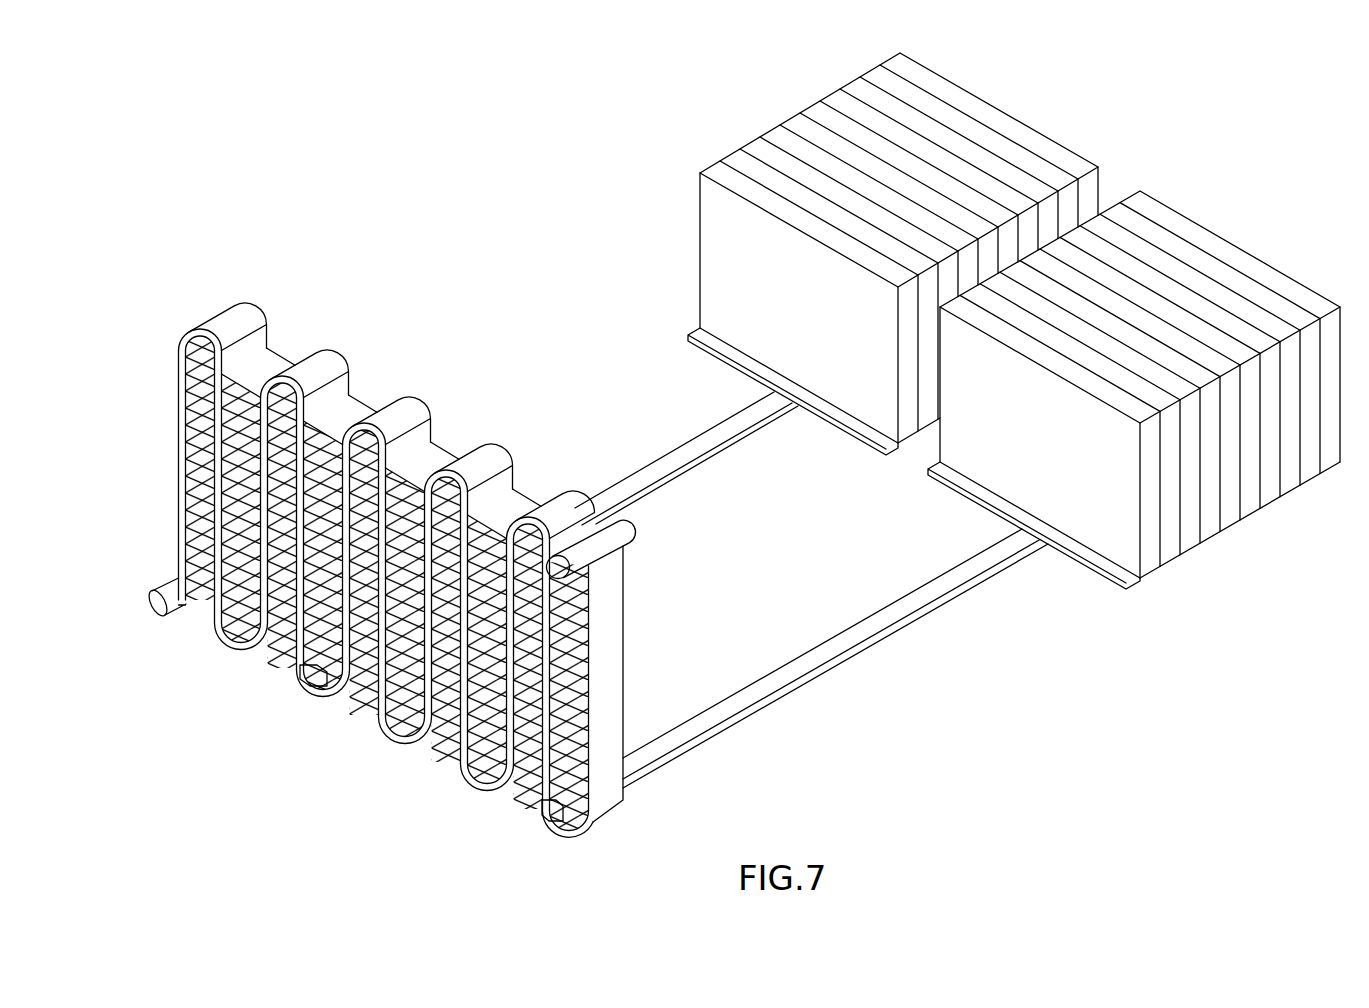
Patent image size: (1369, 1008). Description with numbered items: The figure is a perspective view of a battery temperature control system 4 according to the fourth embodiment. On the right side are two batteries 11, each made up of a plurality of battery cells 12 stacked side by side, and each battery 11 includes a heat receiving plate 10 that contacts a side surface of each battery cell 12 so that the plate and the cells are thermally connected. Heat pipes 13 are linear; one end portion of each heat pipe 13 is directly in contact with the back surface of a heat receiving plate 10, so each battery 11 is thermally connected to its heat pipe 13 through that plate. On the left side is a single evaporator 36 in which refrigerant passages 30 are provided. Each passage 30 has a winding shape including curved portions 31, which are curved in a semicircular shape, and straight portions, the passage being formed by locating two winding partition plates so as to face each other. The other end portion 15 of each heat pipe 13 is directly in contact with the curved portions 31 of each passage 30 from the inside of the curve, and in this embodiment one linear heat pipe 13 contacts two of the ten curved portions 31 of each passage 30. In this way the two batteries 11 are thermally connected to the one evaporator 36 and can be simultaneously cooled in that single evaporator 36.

The battery temperature control system 4 is at (455, 333).
The heat receiving plate 10 is at (714, 353).
The battery 11 is at (957, 369).
The battery cell 12 is at (907, 68).
The heat pipe 13 is at (688, 458).
The other end portion 15 is at (318, 678).
The passage 30 is at (180, 434).
The curved portion 31 is at (237, 313).
The evaporator 36 is at (630, 639).